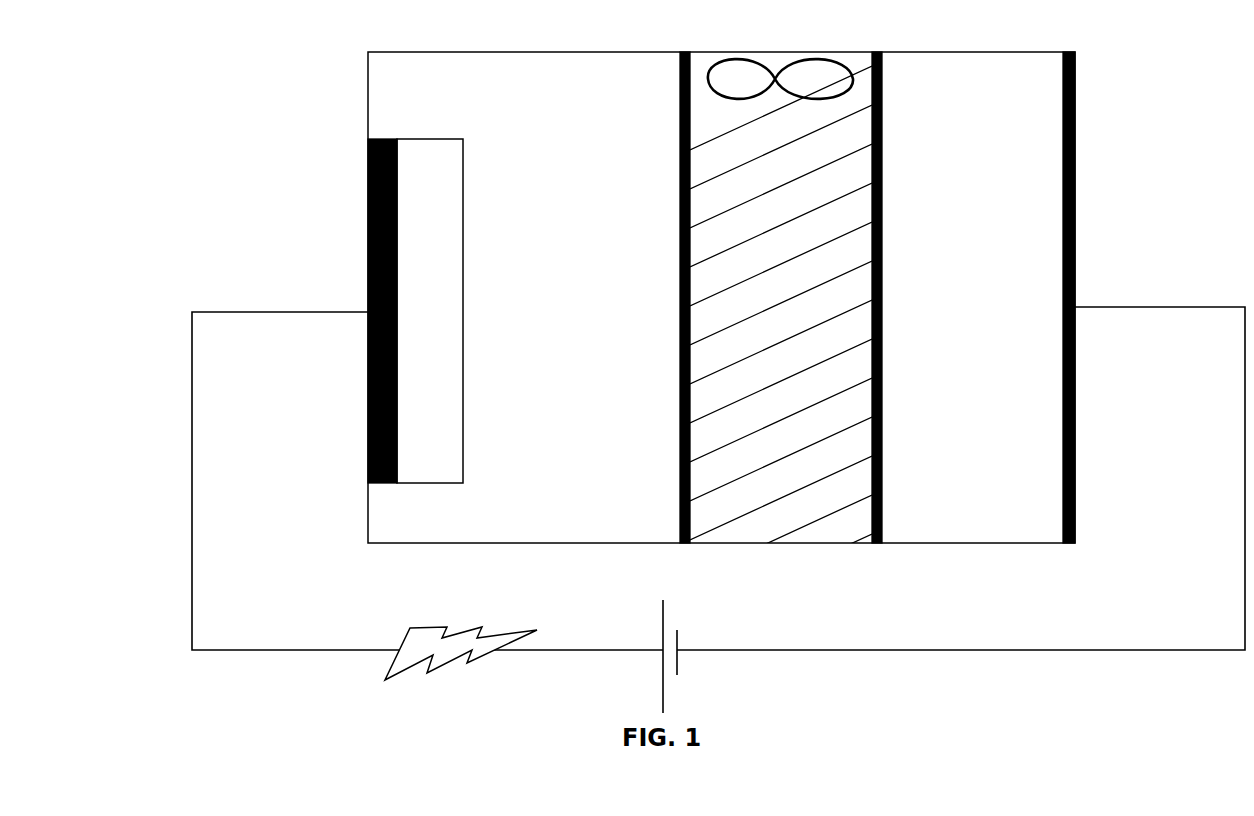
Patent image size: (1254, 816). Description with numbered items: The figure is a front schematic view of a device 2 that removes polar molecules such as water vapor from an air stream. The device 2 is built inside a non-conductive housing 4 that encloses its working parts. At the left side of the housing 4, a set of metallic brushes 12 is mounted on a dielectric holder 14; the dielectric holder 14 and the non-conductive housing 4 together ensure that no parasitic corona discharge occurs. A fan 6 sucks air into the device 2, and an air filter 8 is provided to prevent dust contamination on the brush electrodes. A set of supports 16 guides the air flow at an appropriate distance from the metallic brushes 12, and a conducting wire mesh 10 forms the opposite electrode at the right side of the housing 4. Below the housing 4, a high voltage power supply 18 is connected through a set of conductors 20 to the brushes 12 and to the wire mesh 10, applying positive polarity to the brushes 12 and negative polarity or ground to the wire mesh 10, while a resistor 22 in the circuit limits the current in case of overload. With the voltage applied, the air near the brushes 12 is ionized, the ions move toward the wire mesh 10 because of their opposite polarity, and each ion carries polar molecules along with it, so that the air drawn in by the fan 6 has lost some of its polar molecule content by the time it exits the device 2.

The device 2 is at (938, 675).
The non-conductive housing 4 is at (367, 88).
The fan 6 is at (843, 77).
The air filter 8 is at (837, 245).
The conducting wire mesh 10 is at (1075, 93).
The metallic brushes 12 is at (463, 163).
The dielectric holder 14 is at (368, 185).
The supports 16 is at (680, 390).
The high voltage power supply 18 is at (690, 610).
The conductors 20 is at (192, 415).
The resistor 22 is at (442, 626).